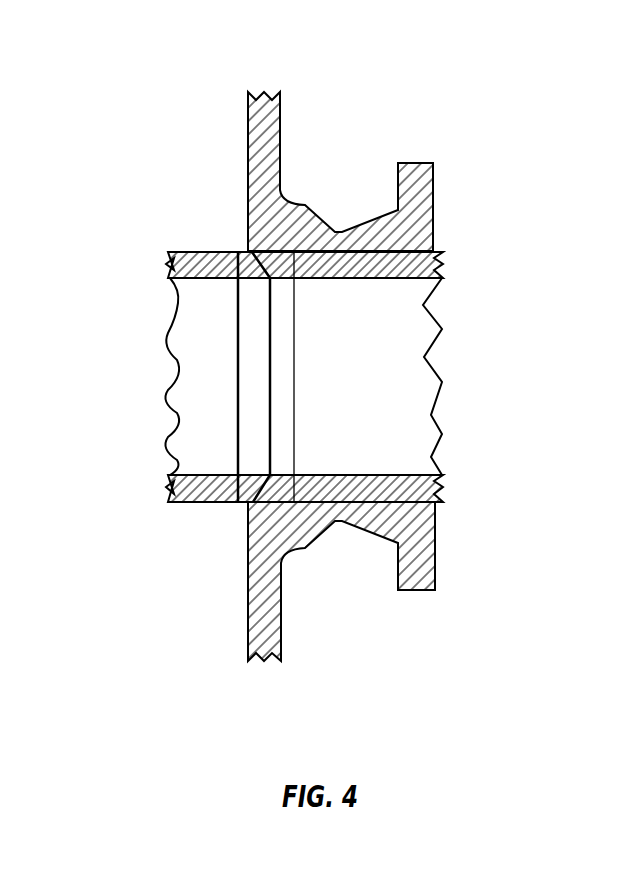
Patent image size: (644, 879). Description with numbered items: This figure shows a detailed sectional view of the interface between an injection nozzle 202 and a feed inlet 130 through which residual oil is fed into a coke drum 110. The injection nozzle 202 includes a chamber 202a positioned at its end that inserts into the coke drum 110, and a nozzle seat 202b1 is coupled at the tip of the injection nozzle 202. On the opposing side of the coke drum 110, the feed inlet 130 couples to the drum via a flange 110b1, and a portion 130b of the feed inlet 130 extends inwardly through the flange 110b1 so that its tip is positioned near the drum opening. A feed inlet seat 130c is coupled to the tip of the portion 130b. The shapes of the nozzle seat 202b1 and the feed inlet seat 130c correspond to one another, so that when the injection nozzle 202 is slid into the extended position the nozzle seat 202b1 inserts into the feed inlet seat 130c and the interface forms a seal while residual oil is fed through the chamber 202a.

The coke drum 110 is at (280, 140).
The flange 110b1 is at (435, 538).
The feed inlet 130 is at (442, 433).
The portion 130b is at (335, 500).
The feed inlet seat 130c is at (297, 367).
The injection nozzle 202 is at (217, 252).
The chamber 202a is at (203, 377).
The nozzle seat 202b1 is at (237, 303).